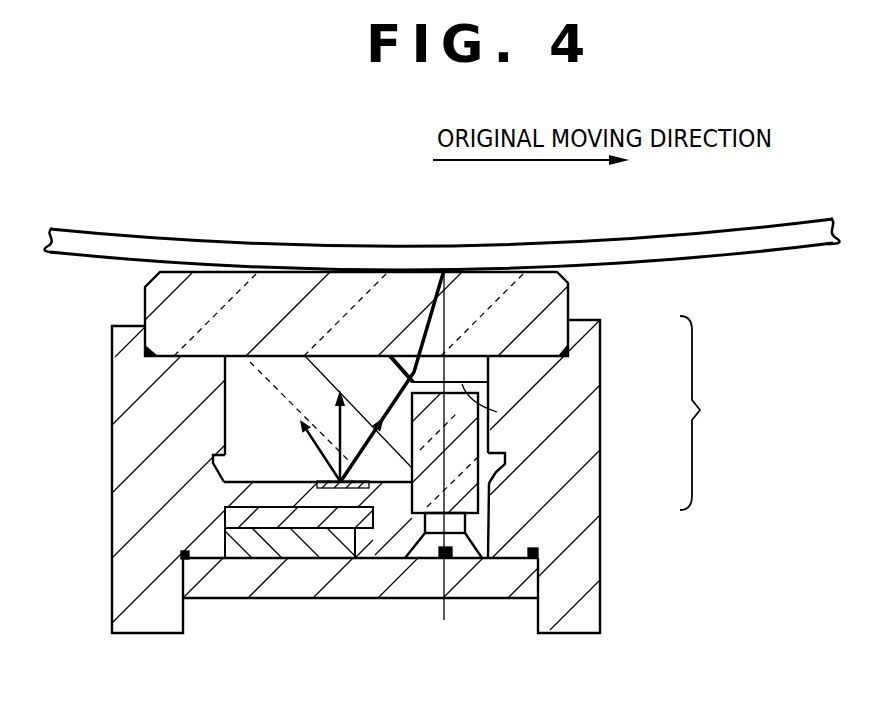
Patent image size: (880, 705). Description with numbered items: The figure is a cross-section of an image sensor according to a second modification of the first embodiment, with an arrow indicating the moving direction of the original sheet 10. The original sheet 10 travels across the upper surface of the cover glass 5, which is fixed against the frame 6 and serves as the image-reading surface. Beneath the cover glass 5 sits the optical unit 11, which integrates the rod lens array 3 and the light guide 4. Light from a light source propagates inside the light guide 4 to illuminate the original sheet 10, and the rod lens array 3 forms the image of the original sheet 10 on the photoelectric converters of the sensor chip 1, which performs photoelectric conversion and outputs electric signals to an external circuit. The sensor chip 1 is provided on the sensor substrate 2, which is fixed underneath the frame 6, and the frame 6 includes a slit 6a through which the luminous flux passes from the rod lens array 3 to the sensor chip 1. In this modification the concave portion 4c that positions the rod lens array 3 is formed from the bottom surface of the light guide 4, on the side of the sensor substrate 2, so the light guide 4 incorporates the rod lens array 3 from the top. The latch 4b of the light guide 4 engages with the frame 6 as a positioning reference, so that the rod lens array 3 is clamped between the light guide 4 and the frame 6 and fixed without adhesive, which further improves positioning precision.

The original sheet 10 is at (610, 257).
The cover glass 5 is at (540, 295).
The light guide 4 is at (495, 372).
The concave portion 4c is at (462, 384).
The rod lens array 3 is at (453, 440).
The latch 4b is at (213, 464).
The optical unit 11 is at (710, 413).
The slit 6a is at (453, 523).
The sensor chip 1 is at (452, 556).
The frame 6 is at (578, 592).
The sensor substrate 2 is at (362, 583).